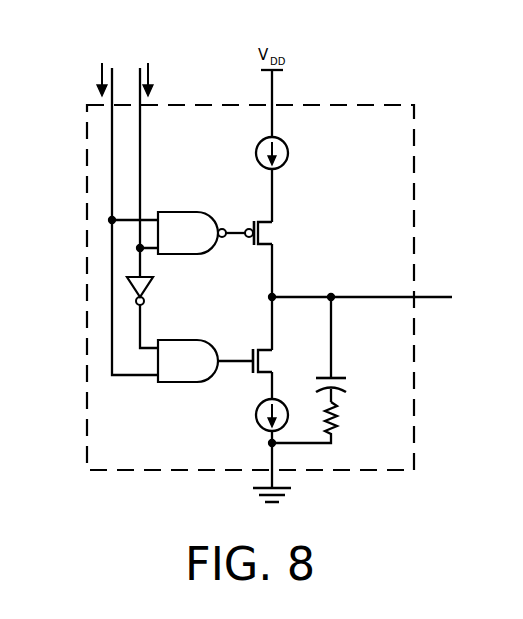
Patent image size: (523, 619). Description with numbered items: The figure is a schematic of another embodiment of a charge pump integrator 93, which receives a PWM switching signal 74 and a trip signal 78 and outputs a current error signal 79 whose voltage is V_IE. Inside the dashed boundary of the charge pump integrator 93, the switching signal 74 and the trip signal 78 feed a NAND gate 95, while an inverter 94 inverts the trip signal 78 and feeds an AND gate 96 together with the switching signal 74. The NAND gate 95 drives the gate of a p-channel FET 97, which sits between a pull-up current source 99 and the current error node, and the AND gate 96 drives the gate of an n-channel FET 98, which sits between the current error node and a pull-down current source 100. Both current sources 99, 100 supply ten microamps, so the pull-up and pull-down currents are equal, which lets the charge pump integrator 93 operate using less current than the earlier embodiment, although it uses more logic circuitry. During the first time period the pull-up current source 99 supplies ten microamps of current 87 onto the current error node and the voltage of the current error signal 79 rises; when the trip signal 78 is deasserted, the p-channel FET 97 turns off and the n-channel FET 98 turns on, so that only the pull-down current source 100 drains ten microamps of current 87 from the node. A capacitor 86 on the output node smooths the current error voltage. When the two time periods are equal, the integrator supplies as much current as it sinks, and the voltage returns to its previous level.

The PWM switching signal 74 is at (100, 73).
The trip signal 78 is at (150, 74).
The current error signal 79 is at (374, 290).
The capacitor 86 is at (349, 389).
The current I_IE 87 is at (375, 299).
The charge pump integrator 93 is at (388, 105).
The inverter 94 is at (154, 288).
The NAND gate 95 is at (198, 241).
The AND gate 96 is at (198, 369).
The p-channel FET 97 is at (275, 233).
The n-channel FET 98 is at (275, 362).
The pull-up current source 99 is at (258, 145).
The pull-down current source 100 is at (254, 404).